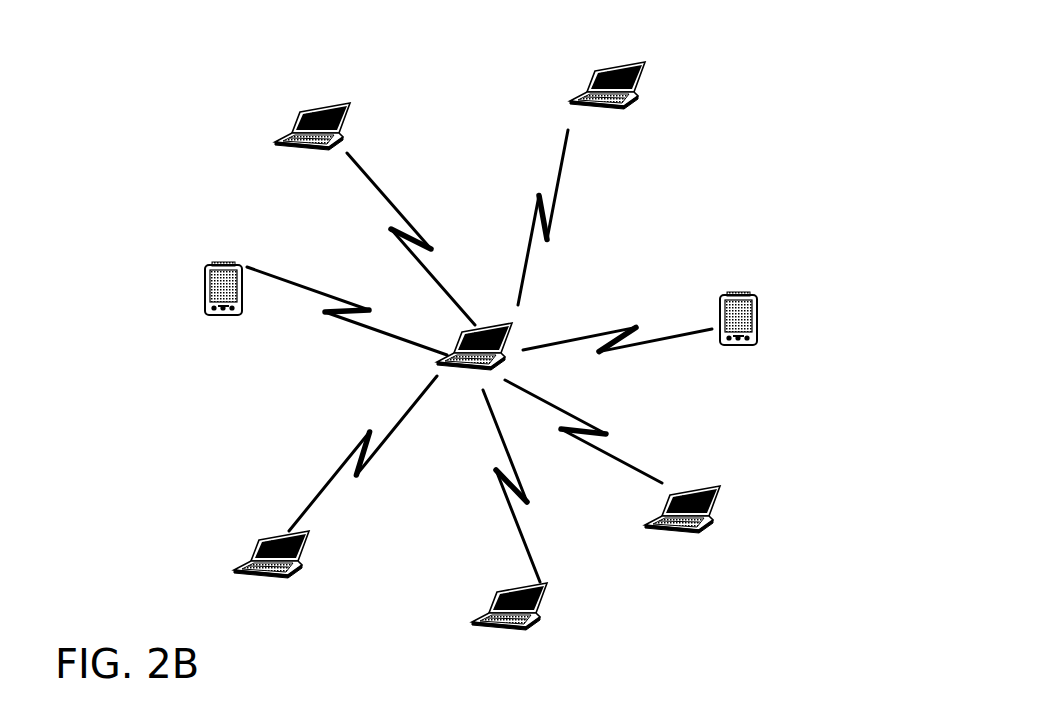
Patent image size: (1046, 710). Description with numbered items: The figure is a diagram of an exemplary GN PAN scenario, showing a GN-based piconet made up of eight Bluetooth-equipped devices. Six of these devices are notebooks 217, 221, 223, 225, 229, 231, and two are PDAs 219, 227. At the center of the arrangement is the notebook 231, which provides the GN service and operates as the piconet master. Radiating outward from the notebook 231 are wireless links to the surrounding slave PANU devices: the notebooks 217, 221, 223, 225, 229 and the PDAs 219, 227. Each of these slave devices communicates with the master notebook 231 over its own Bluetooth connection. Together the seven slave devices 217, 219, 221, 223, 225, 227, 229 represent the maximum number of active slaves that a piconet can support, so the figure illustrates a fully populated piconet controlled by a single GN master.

The notebook 217 is at (646, 68).
The PDA 219 is at (756, 297).
The notebook 221 is at (720, 490).
The notebook 223 is at (547, 587).
The notebook 225 is at (310, 534).
The PDA 227 is at (206, 267).
The notebook 229 is at (355, 107).
The notebook 231 is at (516, 328).